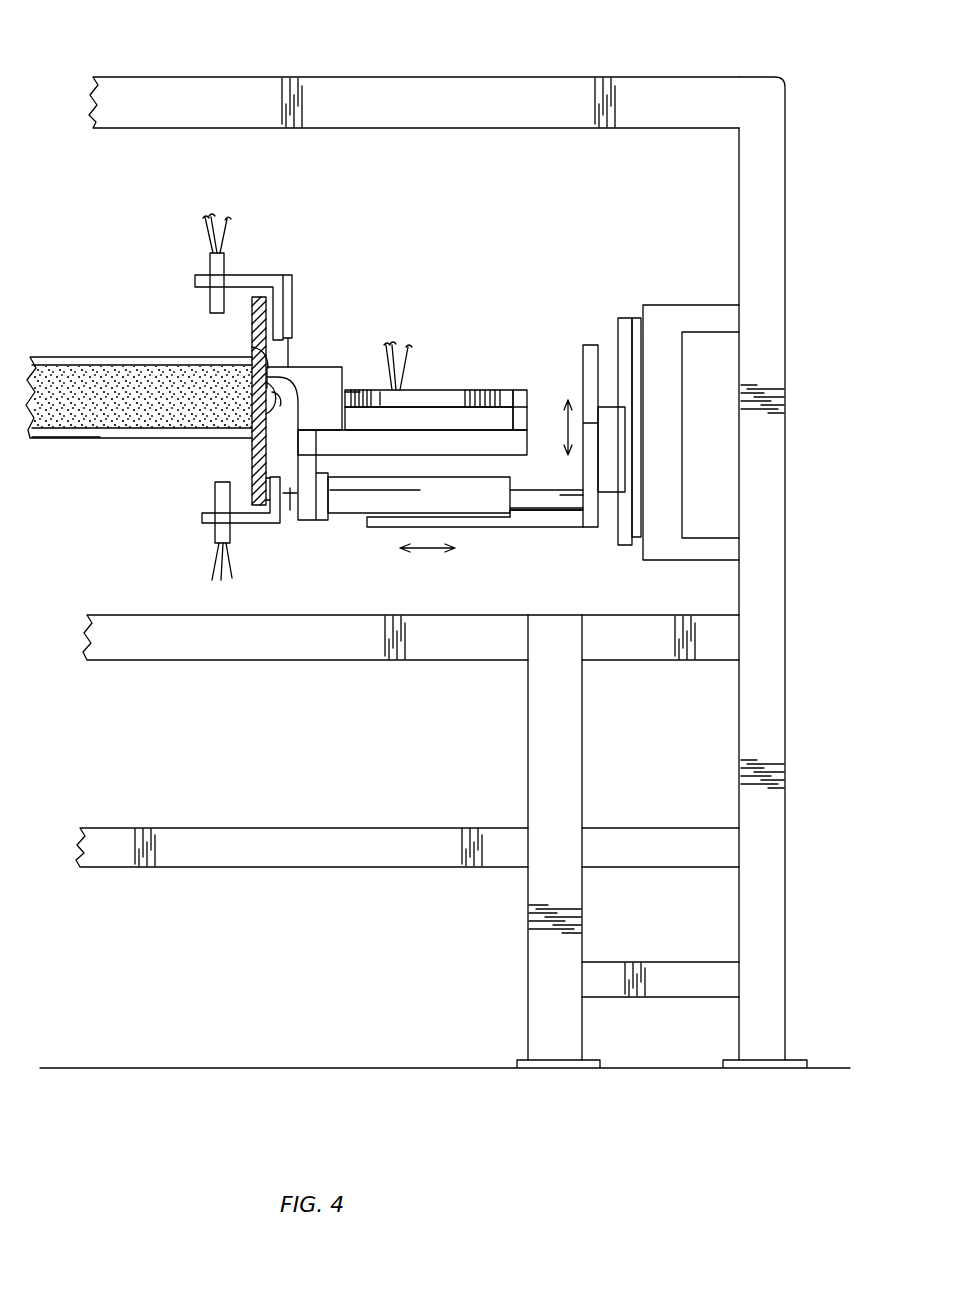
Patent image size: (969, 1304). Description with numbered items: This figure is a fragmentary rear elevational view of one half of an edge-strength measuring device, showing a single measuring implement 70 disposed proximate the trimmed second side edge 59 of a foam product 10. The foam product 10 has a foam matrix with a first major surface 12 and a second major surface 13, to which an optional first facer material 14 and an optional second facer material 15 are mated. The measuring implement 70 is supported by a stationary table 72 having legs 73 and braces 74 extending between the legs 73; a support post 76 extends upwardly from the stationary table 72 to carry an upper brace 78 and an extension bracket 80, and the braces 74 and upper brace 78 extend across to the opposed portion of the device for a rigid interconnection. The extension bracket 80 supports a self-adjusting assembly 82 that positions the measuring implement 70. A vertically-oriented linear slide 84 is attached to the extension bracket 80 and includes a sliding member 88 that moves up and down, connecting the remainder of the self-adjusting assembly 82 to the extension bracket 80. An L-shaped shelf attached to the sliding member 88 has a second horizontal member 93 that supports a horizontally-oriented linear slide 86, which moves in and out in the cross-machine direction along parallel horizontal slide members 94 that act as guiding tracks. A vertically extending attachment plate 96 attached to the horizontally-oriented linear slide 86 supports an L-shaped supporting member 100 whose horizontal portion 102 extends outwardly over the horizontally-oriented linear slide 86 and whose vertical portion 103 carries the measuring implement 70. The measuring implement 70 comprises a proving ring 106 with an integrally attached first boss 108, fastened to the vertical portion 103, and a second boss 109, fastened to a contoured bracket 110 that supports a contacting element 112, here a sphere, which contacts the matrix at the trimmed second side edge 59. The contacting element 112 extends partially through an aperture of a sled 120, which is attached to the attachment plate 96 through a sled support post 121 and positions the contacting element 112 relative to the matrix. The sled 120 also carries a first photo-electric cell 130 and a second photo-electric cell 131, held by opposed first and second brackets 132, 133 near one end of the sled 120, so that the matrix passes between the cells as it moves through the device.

The foam product 10 is at (47, 343).
The first major surface 12 is at (92, 430).
The second major surface 13 is at (145, 365).
The first facer material 14 is at (50, 437).
The second facer material 15 is at (92, 362).
The second side edge 59 is at (258, 355).
The measuring implement 70 is at (164, 220).
The stationary table 72 is at (797, 853).
The legs 73 is at (540, 733).
The braces 74 is at (205, 650).
The support post 76 is at (777, 492).
The upper brace 78 is at (510, 95).
The extension bracket 80 is at (668, 318).
The self-adjusting assembly 82 is at (604, 318).
The vertically-oriented linear slide 84 is at (625, 322).
The horizontally-oriented linear slide 86 is at (385, 517).
The sliding member 88 is at (618, 465).
The second horizontal member 93 is at (540, 515).
The horizontal slide members 94 is at (570, 505).
The attachment plate 96 is at (305, 503).
The L-shaped supporting member 100 is at (482, 465).
The horizontal portion 102 is at (445, 447).
The vertical portion 103 is at (520, 400).
The proving ring 106 is at (440, 380).
The first boss 108 is at (500, 395).
The second boss 109 is at (355, 390).
The contoured bracket 110 is at (318, 373).
The contacting element 112 is at (255, 455).
The sled 120 is at (248, 484).
The sled support post 121 is at (290, 510).
The first photo-electric cell 130 is at (218, 538).
The second photo-electric cell 131 is at (222, 258).
The first bracket 132 is at (248, 523).
The second bracket 133 is at (270, 283).